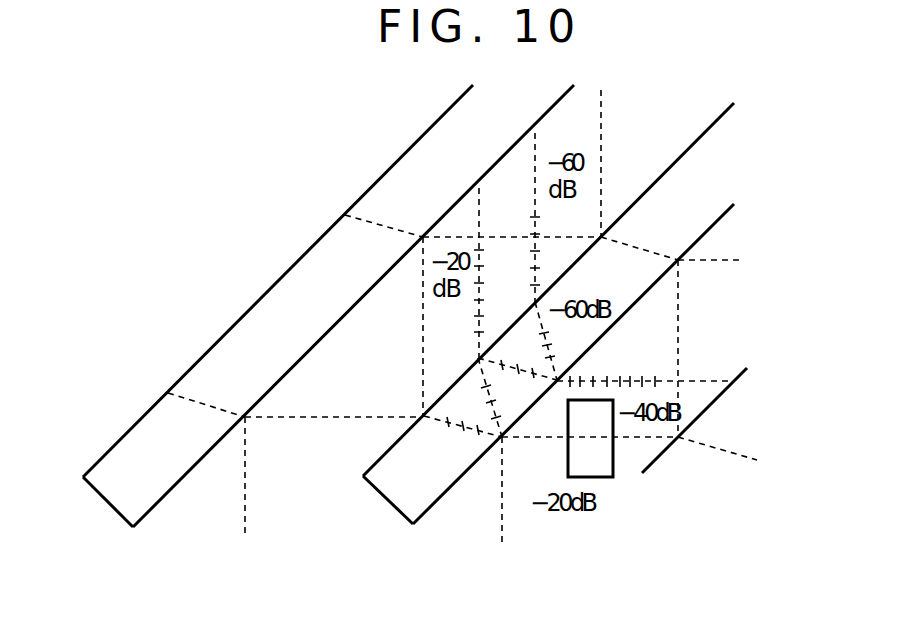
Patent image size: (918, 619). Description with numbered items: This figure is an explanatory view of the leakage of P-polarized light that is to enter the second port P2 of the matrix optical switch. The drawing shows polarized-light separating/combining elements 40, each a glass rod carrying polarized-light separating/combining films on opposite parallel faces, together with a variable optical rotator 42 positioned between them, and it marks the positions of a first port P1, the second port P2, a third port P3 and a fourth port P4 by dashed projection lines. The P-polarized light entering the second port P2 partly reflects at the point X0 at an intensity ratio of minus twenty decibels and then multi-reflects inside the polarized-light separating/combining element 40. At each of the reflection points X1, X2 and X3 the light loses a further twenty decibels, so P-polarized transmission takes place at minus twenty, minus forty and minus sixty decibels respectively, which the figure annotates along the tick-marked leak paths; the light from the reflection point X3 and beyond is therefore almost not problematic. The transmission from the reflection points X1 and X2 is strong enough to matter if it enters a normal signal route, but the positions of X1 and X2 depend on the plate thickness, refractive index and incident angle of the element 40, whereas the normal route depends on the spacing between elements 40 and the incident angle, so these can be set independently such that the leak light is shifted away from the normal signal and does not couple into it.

The polarized-light separating/combining element 40 is at (281, 298).
The variable optical rotator 42 is at (603, 467).
The first port P1 is at (499, 505).
The second port P2 is at (462, 438).
The third port P3 is at (710, 348).
The fourth port P4 is at (717, 463).
The point X0 is at (507, 414).
The reflection point X1 is at (463, 277).
The reflection point X2 is at (605, 367).
The reflection point X3 is at (526, 256).